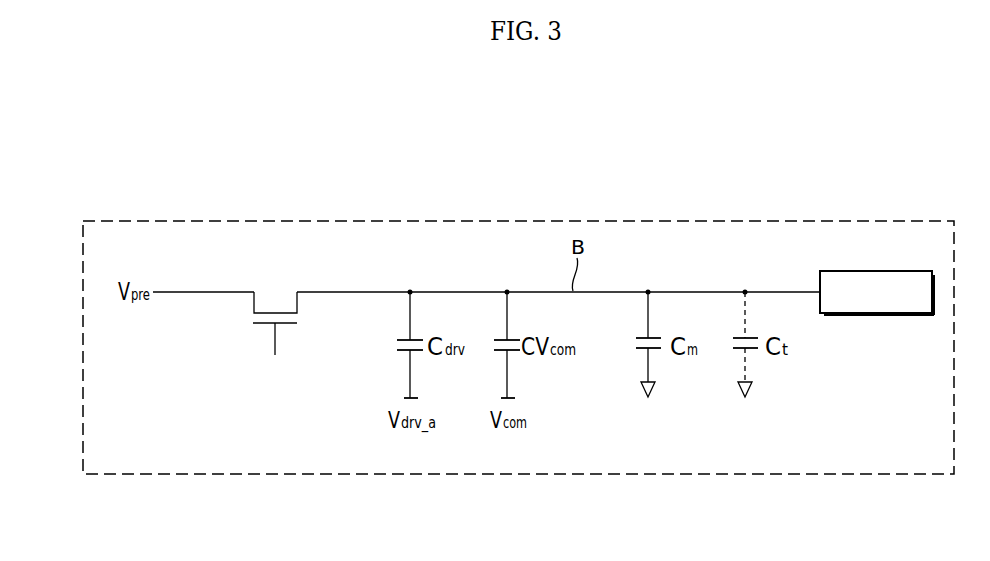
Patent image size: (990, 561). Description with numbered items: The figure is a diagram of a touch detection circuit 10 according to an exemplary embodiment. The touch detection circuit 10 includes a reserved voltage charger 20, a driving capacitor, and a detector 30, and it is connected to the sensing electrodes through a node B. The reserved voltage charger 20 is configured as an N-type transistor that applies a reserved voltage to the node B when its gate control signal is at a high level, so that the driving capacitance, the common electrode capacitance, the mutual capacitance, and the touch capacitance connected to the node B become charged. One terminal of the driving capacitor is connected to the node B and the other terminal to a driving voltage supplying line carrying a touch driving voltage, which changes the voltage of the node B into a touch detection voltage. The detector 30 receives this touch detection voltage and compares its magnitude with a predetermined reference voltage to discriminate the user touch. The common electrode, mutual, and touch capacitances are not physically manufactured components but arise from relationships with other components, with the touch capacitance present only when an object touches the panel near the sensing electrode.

The touch detection circuit 10 is at (860, 221).
The reserved voltage charger 20 is at (256, 300).
The detector 30 is at (878, 314).